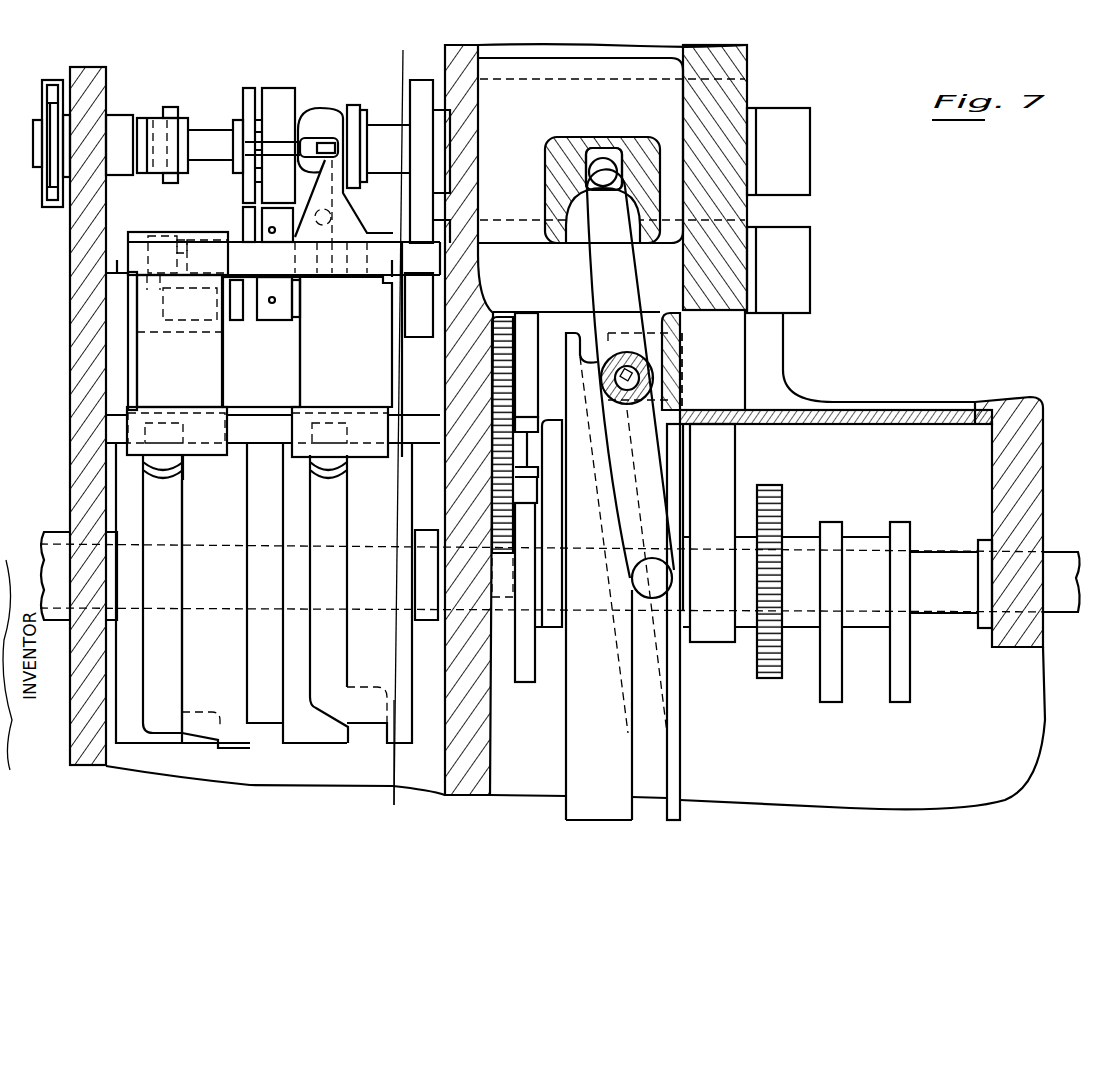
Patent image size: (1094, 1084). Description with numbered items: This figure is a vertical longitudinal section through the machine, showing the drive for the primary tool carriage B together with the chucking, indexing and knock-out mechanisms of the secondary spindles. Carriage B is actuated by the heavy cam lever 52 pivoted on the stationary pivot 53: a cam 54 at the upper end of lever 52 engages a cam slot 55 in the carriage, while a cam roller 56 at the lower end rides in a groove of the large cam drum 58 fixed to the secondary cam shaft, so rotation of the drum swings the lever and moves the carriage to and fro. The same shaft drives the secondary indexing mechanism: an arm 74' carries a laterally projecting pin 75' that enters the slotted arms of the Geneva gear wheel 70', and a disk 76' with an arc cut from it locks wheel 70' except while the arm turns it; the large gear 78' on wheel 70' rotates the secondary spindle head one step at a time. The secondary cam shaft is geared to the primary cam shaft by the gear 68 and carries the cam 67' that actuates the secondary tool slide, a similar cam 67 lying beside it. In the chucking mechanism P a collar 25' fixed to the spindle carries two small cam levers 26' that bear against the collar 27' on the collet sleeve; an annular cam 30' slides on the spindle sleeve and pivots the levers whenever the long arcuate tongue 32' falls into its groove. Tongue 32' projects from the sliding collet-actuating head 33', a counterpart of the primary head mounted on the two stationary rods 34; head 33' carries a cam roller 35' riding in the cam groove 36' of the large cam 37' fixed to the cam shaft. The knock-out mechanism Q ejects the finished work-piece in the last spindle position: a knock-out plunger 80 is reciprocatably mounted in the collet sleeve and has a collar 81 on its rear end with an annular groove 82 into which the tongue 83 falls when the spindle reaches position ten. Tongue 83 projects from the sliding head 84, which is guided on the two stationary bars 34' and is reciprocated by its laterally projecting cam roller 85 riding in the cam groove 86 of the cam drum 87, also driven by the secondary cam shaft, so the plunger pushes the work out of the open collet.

The primary tool-carriage B is at (554, 170).
The cam slot 55 is at (607, 152).
The cam 54 is at (603, 181).
The cam lever 52 is at (600, 265).
The cam roller 56 is at (655, 558).
The cam drum 58 is at (570, 760).
The stationary pivot 53 is at (612, 360).
The large gear 78' is at (519, 440).
The Geneva gear wheel 70' is at (545, 365).
The laterally projecting pin 75' is at (528, 460).
The arm 74' is at (551, 507).
The disk 76' is at (517, 612).
The gear 68 is at (775, 490).
The cam 67' is at (818, 631).
The cam 67 is at (914, 626).
The collar 27' is at (147, 148).
The collar 25' is at (278, 147).
The cam levers 26' is at (291, 133).
The annular cam 30' is at (344, 170).
The arcuate tongue 32' is at (378, 128).
The knock-out plunger 80 is at (215, 250).
The annular groove 82 is at (172, 237).
The collar 81 is at (206, 240).
The tongue 83 is at (182, 306).
The stationary rods 34 is at (122, 341).
The sliding head 84 is at (177, 365).
The knock-out mechanism Q is at (138, 368).
The chucking mechanism P is at (300, 367).
The collet-actuating head 33' is at (342, 367).
The stationary bars 34' is at (333, 411).
The cam roller 85 is at (164, 482).
The cam roller 35' is at (328, 485).
The cam groove 86 is at (170, 672).
The cam drum 87 is at (232, 747).
The cam groove 36' is at (348, 611).
The large cam 37' is at (367, 653).